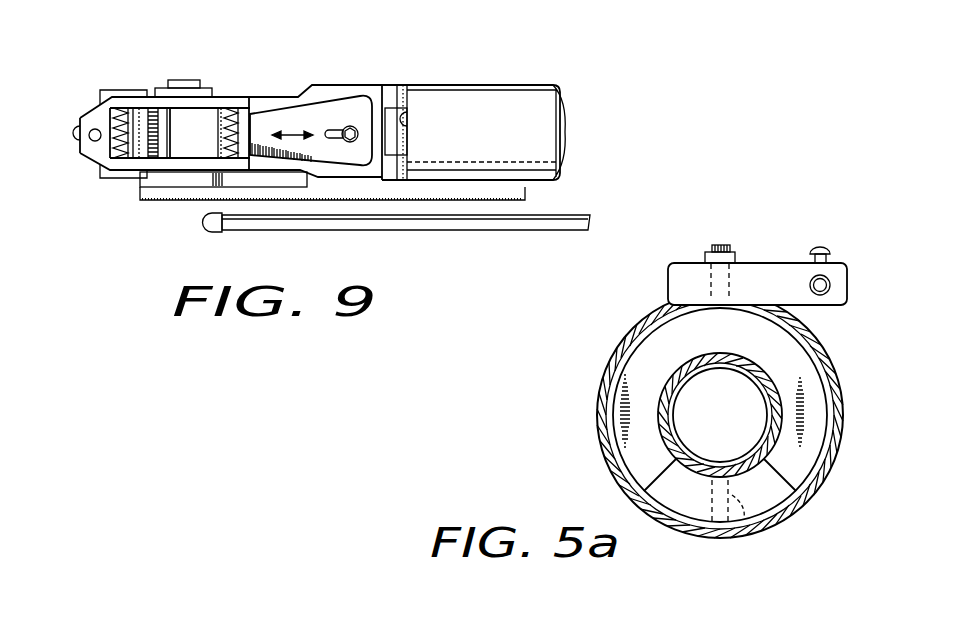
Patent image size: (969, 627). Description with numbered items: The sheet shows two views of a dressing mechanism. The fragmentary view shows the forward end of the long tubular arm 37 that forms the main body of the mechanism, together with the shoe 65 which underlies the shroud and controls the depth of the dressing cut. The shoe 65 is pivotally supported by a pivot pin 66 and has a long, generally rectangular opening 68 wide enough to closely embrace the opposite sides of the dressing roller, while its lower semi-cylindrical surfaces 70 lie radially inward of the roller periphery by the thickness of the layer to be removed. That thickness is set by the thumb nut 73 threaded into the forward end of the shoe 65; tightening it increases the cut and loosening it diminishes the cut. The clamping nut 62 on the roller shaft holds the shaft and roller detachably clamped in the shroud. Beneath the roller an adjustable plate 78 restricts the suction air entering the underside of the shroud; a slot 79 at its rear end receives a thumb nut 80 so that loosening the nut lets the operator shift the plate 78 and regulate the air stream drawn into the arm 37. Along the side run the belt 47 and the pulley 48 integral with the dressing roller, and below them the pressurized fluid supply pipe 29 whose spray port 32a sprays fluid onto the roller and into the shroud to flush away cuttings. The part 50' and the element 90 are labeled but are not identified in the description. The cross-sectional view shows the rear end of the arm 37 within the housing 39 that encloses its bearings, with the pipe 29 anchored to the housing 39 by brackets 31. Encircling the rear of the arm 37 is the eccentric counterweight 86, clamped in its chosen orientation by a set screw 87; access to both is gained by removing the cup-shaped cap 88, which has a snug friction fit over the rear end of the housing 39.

In FIG. 9, the shoe 65 is at (80, 104).
In FIG. 9, the thumb nut 73 is at (74, 133).
In FIG. 9, the rectangular opening 68 is at (130, 117).
In FIG. 9, the semi-cylindrical surfaces 70 is at (187, 103).
In FIG. 9, the clamping nut 62 is at (195, 82).
In FIG. 9, the piston 50' is at (220, 102).
In FIG. 9, the adjustable plate 78 is at (292, 115).
In FIG. 9, the slot 79 is at (333, 139).
In FIG. 9, the thumb nut 80 is at (352, 143).
In FIG. 9, the pivot pin 66 is at (408, 128).
In FIG. 9, the tubular arm 37 is at (541, 126).
In FIG. 5a, the tubular arm 37 is at (717, 363).
In FIG. 9, the belt 47 is at (280, 201).
In FIG. 9, the pulley 48 is at (187, 205).
In FIG. 9, the fluid supply pipe 29 is at (512, 223).
In FIG. 5a, the fluid supply pipe 29 is at (831, 280).
In FIG. 9, the spray port 32a is at (293, 218).
In FIG. 5a, the housing 39 is at (810, 324).
In FIG. 5a, the cup-shaped cap 88 is at (831, 371).
In FIG. 5a, the eccentric counterweight 86 is at (774, 496).
In FIG. 5a, the set screw 87 is at (743, 528).
In FIG. 5a, the brackets 31 is at (762, 267).
In FIG. 5a, the adjusting knob 90 is at (725, 246).